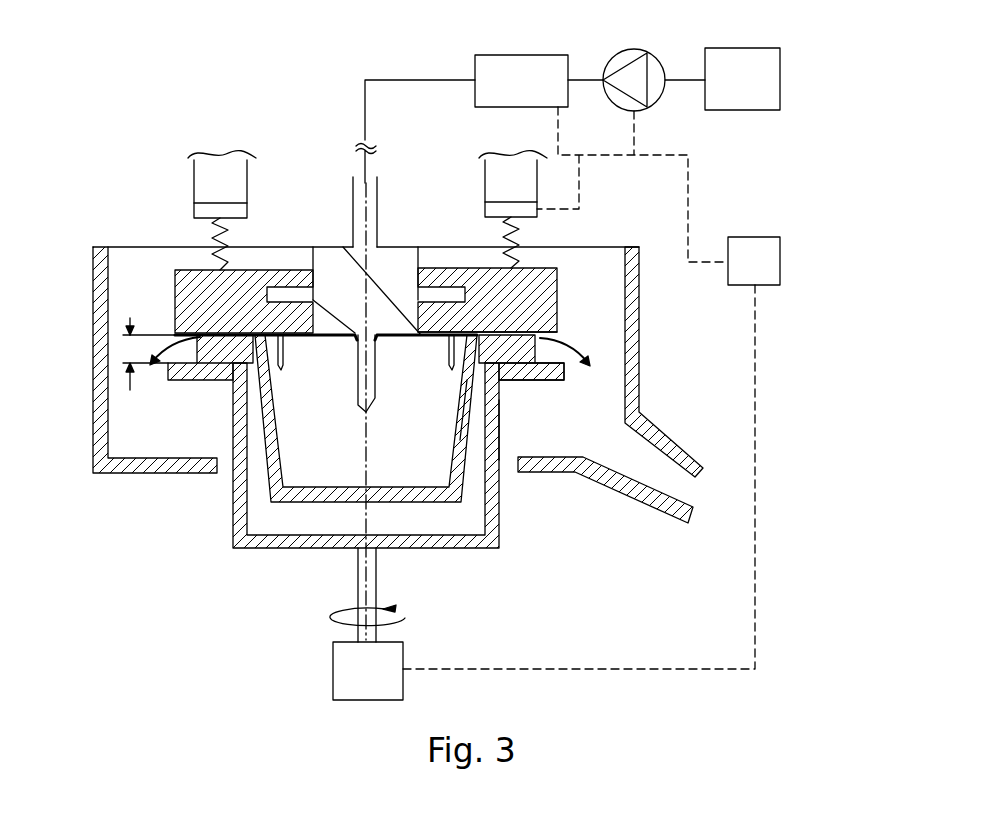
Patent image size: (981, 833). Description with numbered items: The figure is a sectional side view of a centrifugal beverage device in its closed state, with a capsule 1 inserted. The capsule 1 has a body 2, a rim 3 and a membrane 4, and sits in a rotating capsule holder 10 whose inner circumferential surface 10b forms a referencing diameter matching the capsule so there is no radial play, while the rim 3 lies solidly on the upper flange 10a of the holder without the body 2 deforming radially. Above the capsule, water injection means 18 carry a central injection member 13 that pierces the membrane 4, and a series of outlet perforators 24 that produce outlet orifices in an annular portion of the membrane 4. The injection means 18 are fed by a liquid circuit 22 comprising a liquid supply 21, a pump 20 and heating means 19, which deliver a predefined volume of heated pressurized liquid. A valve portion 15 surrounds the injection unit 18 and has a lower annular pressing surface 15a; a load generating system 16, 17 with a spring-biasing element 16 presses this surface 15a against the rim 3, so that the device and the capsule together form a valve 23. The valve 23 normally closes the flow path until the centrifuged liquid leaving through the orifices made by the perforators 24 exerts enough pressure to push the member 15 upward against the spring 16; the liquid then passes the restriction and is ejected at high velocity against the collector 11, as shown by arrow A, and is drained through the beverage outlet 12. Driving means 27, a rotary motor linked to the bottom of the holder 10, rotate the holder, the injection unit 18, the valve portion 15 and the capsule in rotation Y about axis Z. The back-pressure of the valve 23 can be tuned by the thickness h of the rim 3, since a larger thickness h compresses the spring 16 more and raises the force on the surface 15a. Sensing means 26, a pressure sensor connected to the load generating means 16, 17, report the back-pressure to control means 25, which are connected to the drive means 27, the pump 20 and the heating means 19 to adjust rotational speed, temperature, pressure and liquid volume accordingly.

The capsule 1 is at (257, 475).
The body 2 is at (462, 435).
The rim 3 is at (215, 365).
The membrane 4 is at (463, 345).
The capsule holder 10 is at (238, 523).
The upper flange 10a is at (525, 378).
The inner circumferential surface 10b is at (500, 427).
The collector 11 is at (93, 344).
The beverage outlet 12 is at (682, 482).
The injection member 13 is at (358, 400).
The valve portion 15 is at (533, 275).
The lower annular pressing surface 15a is at (545, 330).
The spring-biasing element 16 is at (215, 238).
The load generating system 17 is at (194, 180).
The water injection means 18 is at (335, 272).
The heating means 19 is at (534, 95).
The pump 20 is at (635, 49).
The liquid supply 21 is at (756, 95).
The liquid circuit 22 is at (418, 78).
The valve 23 is at (593, 358).
The outlet perforators 24 is at (286, 352).
The control means 25 is at (767, 276).
The sensing means 26 is at (247, 208).
The driving means 27 is at (381, 683).
The arrow A is at (590, 338).
The axis Z is at (372, 560).
The rotation Y is at (375, 618).
The thickness of the rim h is at (142, 354).